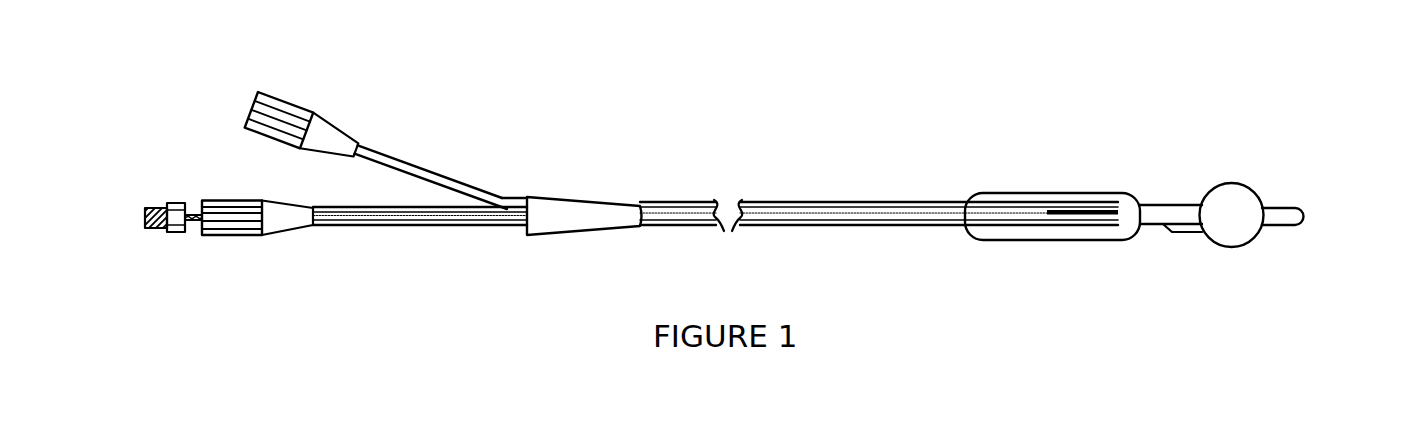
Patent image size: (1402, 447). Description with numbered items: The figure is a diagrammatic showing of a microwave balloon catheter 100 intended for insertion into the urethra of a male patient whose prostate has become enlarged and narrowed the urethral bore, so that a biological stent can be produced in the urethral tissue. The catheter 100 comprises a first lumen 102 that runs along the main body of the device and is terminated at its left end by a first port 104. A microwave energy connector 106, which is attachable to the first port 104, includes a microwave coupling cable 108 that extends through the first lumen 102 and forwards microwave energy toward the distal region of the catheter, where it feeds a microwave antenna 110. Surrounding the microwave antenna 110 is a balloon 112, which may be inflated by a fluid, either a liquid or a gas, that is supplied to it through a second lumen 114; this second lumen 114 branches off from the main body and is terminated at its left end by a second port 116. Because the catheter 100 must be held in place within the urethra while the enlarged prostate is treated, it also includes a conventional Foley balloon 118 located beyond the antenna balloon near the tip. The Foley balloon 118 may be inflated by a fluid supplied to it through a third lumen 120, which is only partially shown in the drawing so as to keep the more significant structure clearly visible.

The microwave balloon catheter 100 is at (847, 64).
The first lumen 102 is at (413, 222).
The first port 104 is at (237, 235).
The microwave energy connector 106 is at (170, 232).
The microwave coupling cable 108 is at (800, 220).
The microwave antenna 110 is at (1053, 211).
The balloon 112 is at (1032, 235).
The second lumen 114 is at (408, 162).
The second port 116 is at (300, 108).
The Foley balloon 118 is at (1248, 242).
The third lumen 120 is at (1190, 235).